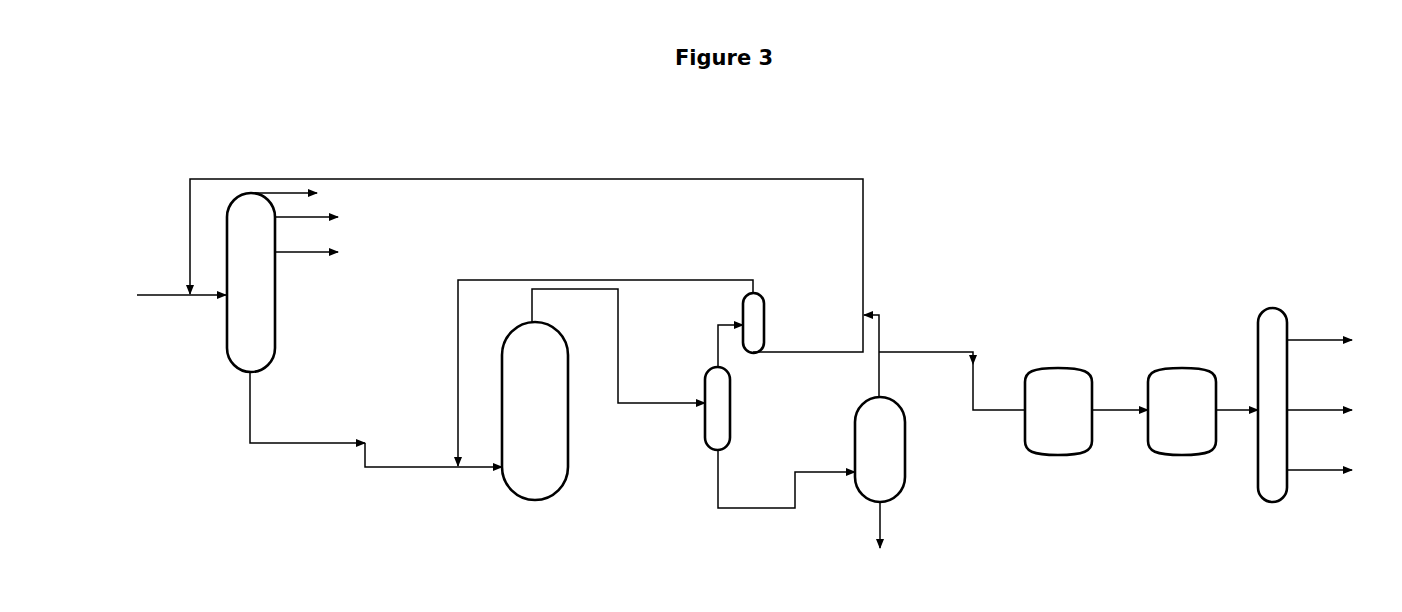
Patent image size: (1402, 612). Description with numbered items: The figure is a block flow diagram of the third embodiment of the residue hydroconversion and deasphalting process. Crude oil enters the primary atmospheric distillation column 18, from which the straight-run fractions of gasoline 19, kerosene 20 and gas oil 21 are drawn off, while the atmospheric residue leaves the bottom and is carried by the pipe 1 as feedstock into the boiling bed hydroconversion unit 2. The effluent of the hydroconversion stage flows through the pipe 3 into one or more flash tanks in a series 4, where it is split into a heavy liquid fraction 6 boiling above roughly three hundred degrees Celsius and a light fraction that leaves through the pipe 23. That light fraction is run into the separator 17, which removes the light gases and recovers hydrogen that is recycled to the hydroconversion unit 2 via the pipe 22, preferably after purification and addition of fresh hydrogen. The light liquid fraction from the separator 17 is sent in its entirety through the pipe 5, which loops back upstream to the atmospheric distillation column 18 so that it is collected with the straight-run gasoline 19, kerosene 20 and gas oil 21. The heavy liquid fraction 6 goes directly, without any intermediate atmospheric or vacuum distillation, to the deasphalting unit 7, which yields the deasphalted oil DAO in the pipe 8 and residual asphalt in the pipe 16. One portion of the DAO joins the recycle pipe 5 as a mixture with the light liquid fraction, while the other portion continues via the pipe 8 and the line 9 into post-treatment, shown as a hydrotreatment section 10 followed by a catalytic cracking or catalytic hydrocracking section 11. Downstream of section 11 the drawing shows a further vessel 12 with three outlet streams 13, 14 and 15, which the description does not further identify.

The pipe 1 is at (376, 419).
The hydroconversion unit 2 is at (535, 411).
The pipe 3 is at (618, 346).
The flash tanks in a series 4 is at (717, 408).
The pipe 5 is at (526, 279).
The heavy liquid fraction 6 is at (786, 479).
The deasphalting unit 7 is at (880, 449).
The pipe 8 is at (918, 356).
The stream to drying unit 9 is at (999, 387).
The hydrotreatment section 10 is at (1086, 411).
The catalytic cracking or catalytic hydrocracking section 11 is at (1203, 411).
The fractionation column 12 is at (1279, 392).
The light product stream 13 is at (1319, 327).
The intermediate product stream 14 is at (1319, 396).
The heavy product stream 15 is at (1319, 456).
The pipe 16 is at (905, 525).
The separator 17 is at (774, 319).
The atmospheric distillation column 18 is at (206, 282).
The gasoline fraction 19 is at (314, 193).
The kerosene fraction 20 is at (326, 223).
The gas oil fraction 21 is at (326, 266).
The pipe 22 is at (605, 358).
The pipe 23 is at (706, 345).